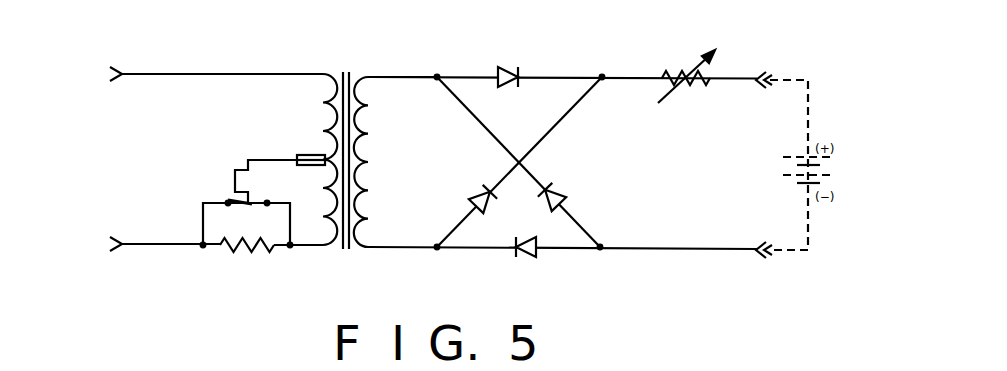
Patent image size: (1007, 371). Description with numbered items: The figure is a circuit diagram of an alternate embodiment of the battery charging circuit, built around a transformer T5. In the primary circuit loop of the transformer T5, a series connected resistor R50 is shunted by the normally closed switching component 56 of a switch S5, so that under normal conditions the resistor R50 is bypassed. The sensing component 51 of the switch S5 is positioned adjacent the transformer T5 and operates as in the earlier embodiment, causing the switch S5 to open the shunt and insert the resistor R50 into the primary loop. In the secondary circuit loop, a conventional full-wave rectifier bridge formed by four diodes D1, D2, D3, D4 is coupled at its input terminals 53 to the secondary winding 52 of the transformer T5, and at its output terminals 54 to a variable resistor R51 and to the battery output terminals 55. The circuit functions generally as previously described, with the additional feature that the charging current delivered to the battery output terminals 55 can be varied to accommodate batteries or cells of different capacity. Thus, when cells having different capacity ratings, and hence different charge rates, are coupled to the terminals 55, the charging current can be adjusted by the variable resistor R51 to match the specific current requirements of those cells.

The transformer T5 is at (346, 72).
The sensing component 51 is at (308, 155).
The secondary winding 52 is at (374, 77).
The input terminals 53 is at (437, 80).
The output terminals 54 is at (602, 77).
The battery output terminals 55 is at (762, 74).
The switching component 56 is at (201, 215).
The switch S5 is at (263, 204).
The resistor R50 is at (250, 254).
The variable resistor R51 is at (671, 70).
The diode D1 is at (509, 67).
The diode D2 is at (561, 192).
The diode D3 is at (537, 250).
The diode D4 is at (472, 194).